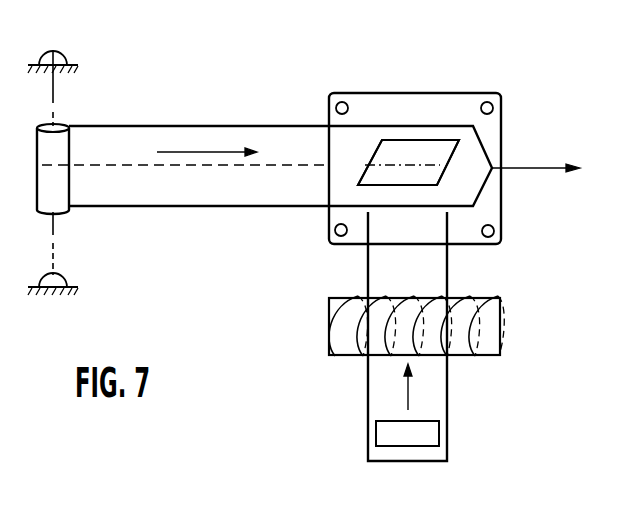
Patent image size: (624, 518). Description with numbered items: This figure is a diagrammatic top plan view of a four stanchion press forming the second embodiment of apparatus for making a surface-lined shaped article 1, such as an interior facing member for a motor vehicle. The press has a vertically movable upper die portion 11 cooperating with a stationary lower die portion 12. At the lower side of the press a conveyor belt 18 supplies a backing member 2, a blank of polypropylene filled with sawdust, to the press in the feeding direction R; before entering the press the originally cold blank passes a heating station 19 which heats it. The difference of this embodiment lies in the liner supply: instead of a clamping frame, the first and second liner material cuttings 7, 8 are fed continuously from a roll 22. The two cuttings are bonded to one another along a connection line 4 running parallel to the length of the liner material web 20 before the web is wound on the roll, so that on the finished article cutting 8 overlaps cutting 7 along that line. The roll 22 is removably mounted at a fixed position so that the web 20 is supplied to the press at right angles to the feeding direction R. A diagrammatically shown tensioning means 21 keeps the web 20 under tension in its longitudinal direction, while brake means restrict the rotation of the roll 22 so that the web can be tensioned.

The surface-lined shaped article 1 is at (410, 93).
The backing member 2 is at (389, 434).
The connection line 4 is at (284, 165).
The first liner material cutting 7 is at (182, 133).
The second liner material cutting 8 is at (198, 180).
The upper die portion 11 is at (433, 155).
The lower die portion 12 is at (408, 162).
The conveyor belt 18 is at (368, 403).
The heating station 19 is at (329, 330).
The liner material web 20 is at (106, 127).
The tensioning means 21 is at (534, 172).
The roll 22 is at (60, 187).
The feeding direction R is at (414, 390).